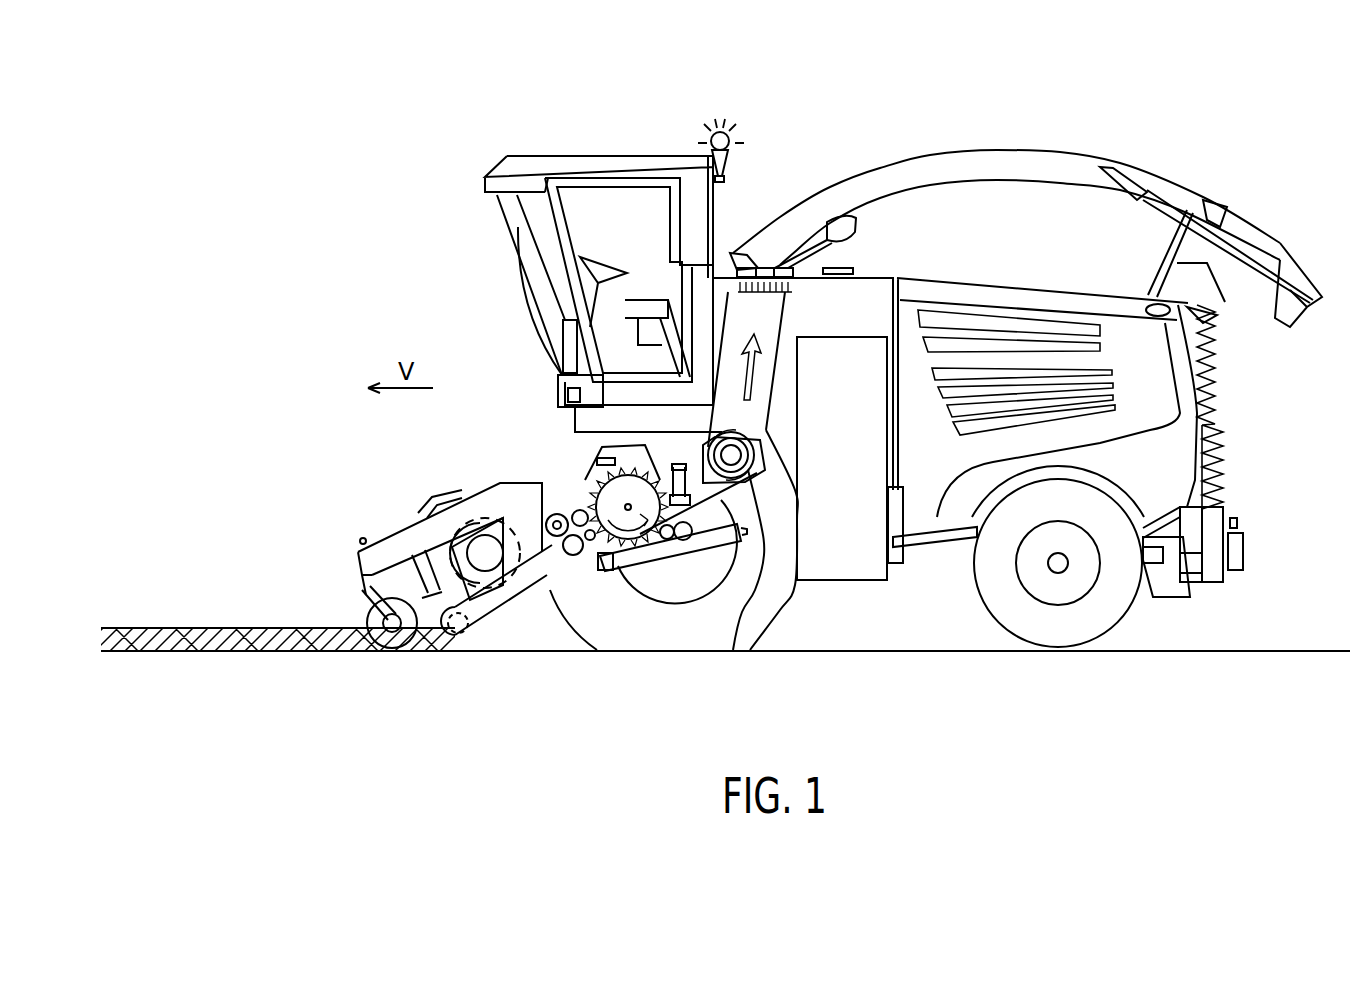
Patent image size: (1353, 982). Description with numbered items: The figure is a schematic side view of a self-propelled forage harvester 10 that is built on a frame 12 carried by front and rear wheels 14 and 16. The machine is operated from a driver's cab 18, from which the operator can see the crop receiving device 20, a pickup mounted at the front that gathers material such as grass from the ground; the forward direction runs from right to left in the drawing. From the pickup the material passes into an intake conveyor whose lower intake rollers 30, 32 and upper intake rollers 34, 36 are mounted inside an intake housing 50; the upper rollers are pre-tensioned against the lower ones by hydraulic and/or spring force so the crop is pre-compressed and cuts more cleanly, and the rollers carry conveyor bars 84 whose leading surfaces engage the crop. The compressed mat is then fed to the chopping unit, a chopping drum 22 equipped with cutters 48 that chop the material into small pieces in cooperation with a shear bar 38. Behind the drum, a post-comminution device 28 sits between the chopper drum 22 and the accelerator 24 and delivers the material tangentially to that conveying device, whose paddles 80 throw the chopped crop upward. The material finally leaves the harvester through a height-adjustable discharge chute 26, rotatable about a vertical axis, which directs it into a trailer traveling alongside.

The forage harvester 10 is at (313, 294).
The frame 12 is at (922, 546).
The front wheels 14 is at (620, 628).
The rear wheels 16 is at (1110, 600).
The driver's cab 18 is at (527, 233).
The crop receiving device 20 is at (346, 479).
The chopping drum 22 is at (634, 572).
The accelerator 24 is at (777, 560).
The discharge chute 26 is at (965, 162).
The post-comminution device 28 is at (736, 632).
The lower intake roller 30 is at (580, 573).
The lower intake roller 32 is at (547, 560).
The upper intake roller 34 is at (560, 520).
The upper intake roller 36 is at (590, 470).
The shear bar 38 is at (617, 567).
The cutters 48 is at (568, 440).
The intake housing 50 is at (515, 610).
The paddles 80 is at (748, 440).
The conveyor bars 84 is at (545, 550).